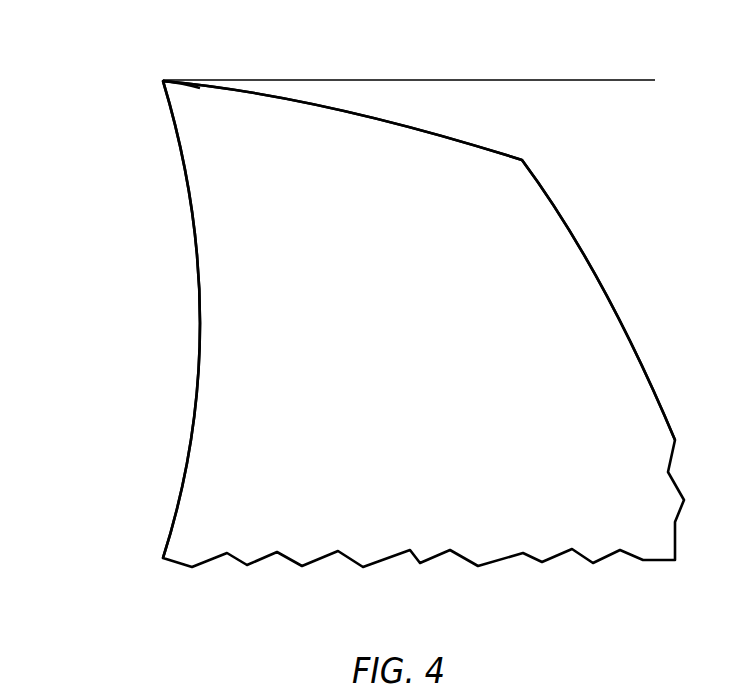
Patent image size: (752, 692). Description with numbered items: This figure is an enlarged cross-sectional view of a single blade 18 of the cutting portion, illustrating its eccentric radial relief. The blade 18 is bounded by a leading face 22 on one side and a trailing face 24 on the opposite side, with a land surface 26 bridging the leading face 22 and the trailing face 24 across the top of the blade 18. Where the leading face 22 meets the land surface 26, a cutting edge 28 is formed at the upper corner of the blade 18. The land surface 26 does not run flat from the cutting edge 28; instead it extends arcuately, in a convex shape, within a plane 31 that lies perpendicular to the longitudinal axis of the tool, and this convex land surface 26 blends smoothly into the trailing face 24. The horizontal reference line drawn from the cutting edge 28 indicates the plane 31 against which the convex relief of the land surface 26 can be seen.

The blade 18 is at (74, 122).
The leading face 22 is at (196, 372).
The trailing face 24 is at (600, 285).
The land surface 26 is at (367, 113).
The cutting edge 28 is at (163, 81).
The plane 31 is at (632, 80).